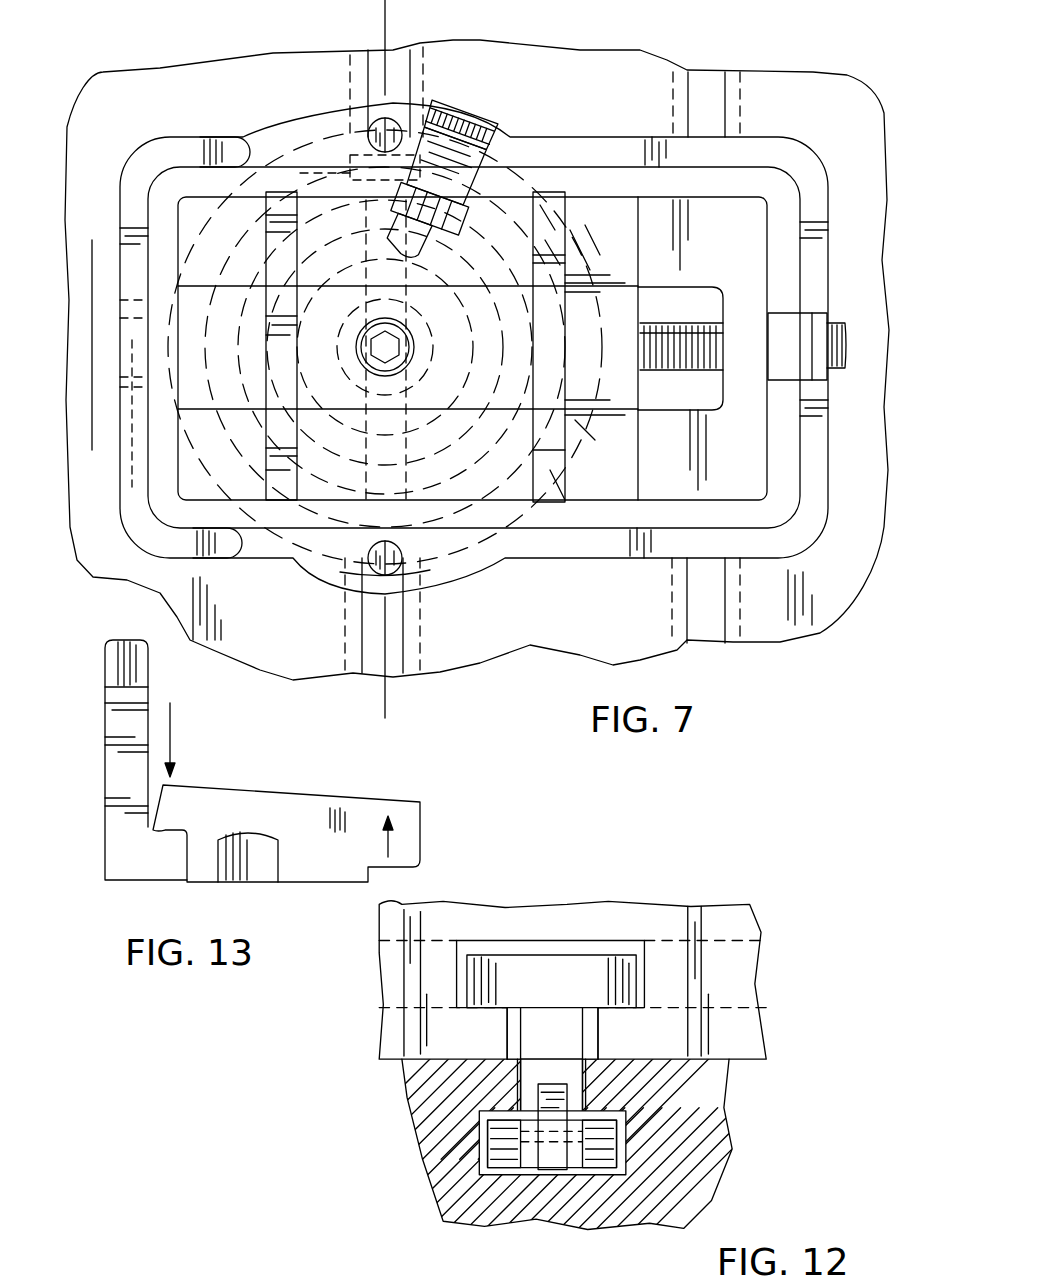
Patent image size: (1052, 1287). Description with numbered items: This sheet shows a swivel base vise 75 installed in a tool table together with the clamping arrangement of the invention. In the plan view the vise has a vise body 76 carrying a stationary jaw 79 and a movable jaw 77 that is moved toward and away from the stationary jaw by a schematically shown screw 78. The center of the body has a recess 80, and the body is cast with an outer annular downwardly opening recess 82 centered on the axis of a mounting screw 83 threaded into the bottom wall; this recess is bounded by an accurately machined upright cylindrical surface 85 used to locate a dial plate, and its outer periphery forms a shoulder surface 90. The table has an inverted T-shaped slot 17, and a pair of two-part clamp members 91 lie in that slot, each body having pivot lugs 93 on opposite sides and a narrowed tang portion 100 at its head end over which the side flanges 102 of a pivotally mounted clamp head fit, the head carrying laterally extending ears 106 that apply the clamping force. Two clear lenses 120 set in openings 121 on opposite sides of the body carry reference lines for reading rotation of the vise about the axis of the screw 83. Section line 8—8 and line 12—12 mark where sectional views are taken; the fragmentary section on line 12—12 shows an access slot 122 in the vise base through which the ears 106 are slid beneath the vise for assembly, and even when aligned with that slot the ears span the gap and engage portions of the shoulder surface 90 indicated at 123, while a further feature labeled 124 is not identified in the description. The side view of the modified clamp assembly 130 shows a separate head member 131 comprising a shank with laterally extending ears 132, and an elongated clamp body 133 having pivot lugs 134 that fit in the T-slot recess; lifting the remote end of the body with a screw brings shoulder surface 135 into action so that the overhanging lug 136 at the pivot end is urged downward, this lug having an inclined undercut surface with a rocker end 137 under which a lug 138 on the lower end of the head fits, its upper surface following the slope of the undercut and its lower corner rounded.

In FIG. 7, the section line 8— 8 is at (371, 15).
In FIG. 7, the line 12— 12 is at (116, 273).
In FIG. 7, the slot 17 is at (380, 75).
In FIG. 7, the swivel base vise 75 is at (596, 130).
In FIG. 7, the vise body 76 is at (602, 548).
In FIG. 12, the vise body 76 is at (693, 937).
In FIG. 7, the movable jaw 77 is at (618, 457).
In FIG. 7, the screw 78 is at (675, 323).
In FIG. 7, the stationary jaw 79 is at (270, 315).
In FIG. 7, the recess 80 is at (428, 398).
In FIG. 7, the annular recess 82 is at (433, 170).
In FIG. 7, the mounting screw 83 is at (403, 333).
In FIG. 7, the upright cylindrical surface 85 is at (470, 215).
In FIG. 7, the shoulder surface 90 is at (490, 130).
In FIG. 7, the clamp members 91 is at (319, 405).
In FIG. 12, the pivot lugs 93 is at (493, 1135).
In FIG. 12, the tang portion 100 is at (548, 1080).
In FIG. 12, the side flanges 102 is at (513, 1140).
In FIG. 7, the ears 106 is at (277, 332).
In FIG. 12, the ears 106 is at (613, 952).
In FIG. 7, the clear lenses 120 is at (376, 125).
In FIG. 7, the openings 121 is at (404, 563).
In FIG. 7, the access slot 122 is at (125, 537).
In FIG. 12, the access slot 122 is at (535, 940).
In FIG. 12, the engaged portions of shoulder surface 123 is at (643, 1038).
In FIG. 12, the slot 124 is at (507, 1030).
In FIG. 13, the clamp assembly 130 is at (89, 846).
In FIG. 13, the head member 131 is at (117, 768).
In FIG. 13, the ears 132 is at (117, 672).
In FIG. 13, the clamp body 133 is at (313, 807).
In FIG. 13, the pivot lugs 134 is at (260, 850).
In FIG. 13, the shoulder surface 135 is at (393, 882).
In FIG. 13, the overhanging lug 136 is at (177, 793).
In FIG. 13, the rocker end 137 is at (156, 830).
In FIG. 13, the lug 138 is at (172, 865).